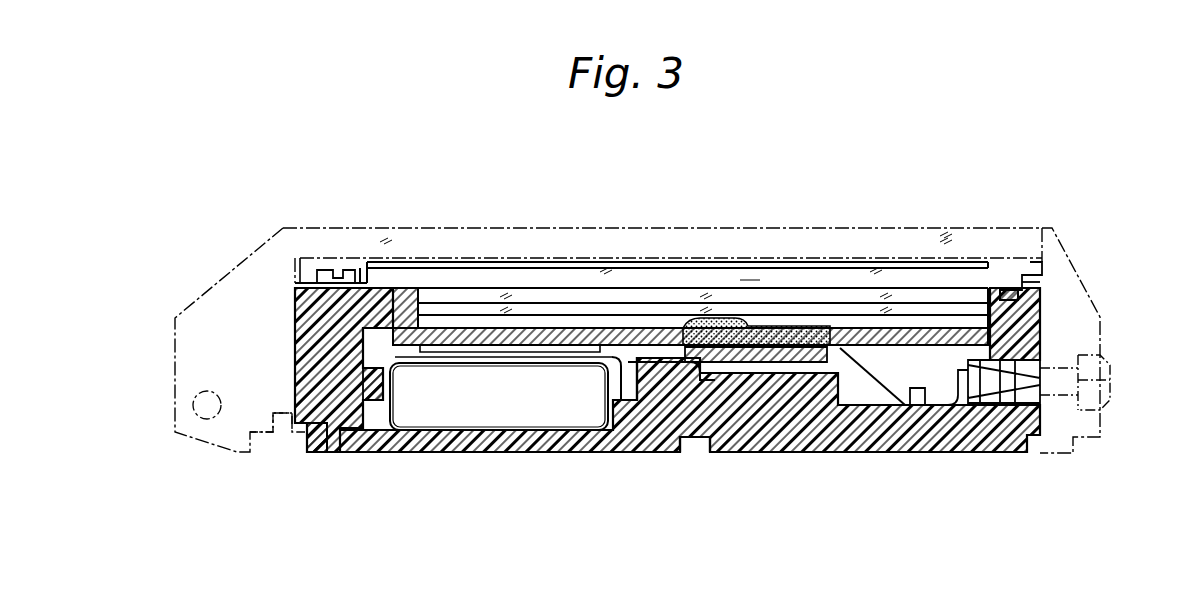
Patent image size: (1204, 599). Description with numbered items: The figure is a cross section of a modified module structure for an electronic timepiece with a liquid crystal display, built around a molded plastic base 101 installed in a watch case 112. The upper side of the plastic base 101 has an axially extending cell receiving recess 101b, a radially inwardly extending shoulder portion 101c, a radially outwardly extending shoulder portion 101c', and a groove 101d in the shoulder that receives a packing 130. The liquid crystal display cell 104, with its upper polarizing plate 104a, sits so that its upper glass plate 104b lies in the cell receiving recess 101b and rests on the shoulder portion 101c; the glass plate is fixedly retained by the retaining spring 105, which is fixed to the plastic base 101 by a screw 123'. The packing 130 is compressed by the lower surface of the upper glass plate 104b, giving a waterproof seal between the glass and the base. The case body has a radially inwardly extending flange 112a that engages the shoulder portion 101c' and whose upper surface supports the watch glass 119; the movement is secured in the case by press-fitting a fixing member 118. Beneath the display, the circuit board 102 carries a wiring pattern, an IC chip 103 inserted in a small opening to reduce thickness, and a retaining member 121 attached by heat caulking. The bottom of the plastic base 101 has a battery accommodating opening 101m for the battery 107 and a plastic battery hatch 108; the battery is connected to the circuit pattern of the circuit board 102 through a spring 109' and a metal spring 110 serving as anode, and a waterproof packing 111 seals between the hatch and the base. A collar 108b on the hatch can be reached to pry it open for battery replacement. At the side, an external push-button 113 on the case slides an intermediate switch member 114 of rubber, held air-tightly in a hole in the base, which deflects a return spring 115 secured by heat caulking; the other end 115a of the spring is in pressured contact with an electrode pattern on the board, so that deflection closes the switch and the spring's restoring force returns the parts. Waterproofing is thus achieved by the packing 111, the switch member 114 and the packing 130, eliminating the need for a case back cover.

The plastic base 101 is at (790, 420).
The cell receiving recess 101b is at (695, 440).
The shoulder portion 101c is at (1017, 260).
The shoulder portion 101c' is at (713, 245).
The groove 101d is at (1035, 282).
The battery accommodating opening 101m is at (648, 402).
The circuit board 102 is at (540, 313).
The IC chip 103 is at (790, 290).
The liquid crystal display cell 104 is at (706, 262).
The upper polarizing plate 104a is at (633, 265).
The upper glass plate 104b is at (735, 280).
The retaining spring 105 is at (380, 287).
The battery 107 is at (508, 417).
The battery hatch 108 is at (624, 380).
The collar 108b is at (655, 432).
The spring 109' is at (503, 424).
The spring 110 is at (607, 373).
The waterproof packing 111 is at (337, 455).
The watch case 112 is at (222, 290).
The flange 112a is at (300, 255).
The external push-button 113 is at (1075, 425).
The intermediate switch member 114 is at (1008, 407).
The return spring 115 is at (905, 407).
The other end of return spring 115a is at (870, 375).
The fixing member 118 is at (283, 442).
The watch glass 119 is at (942, 230).
The retaining member 121 is at (745, 362).
The screw 123' is at (334, 229).
The packing 130 is at (372, 287).